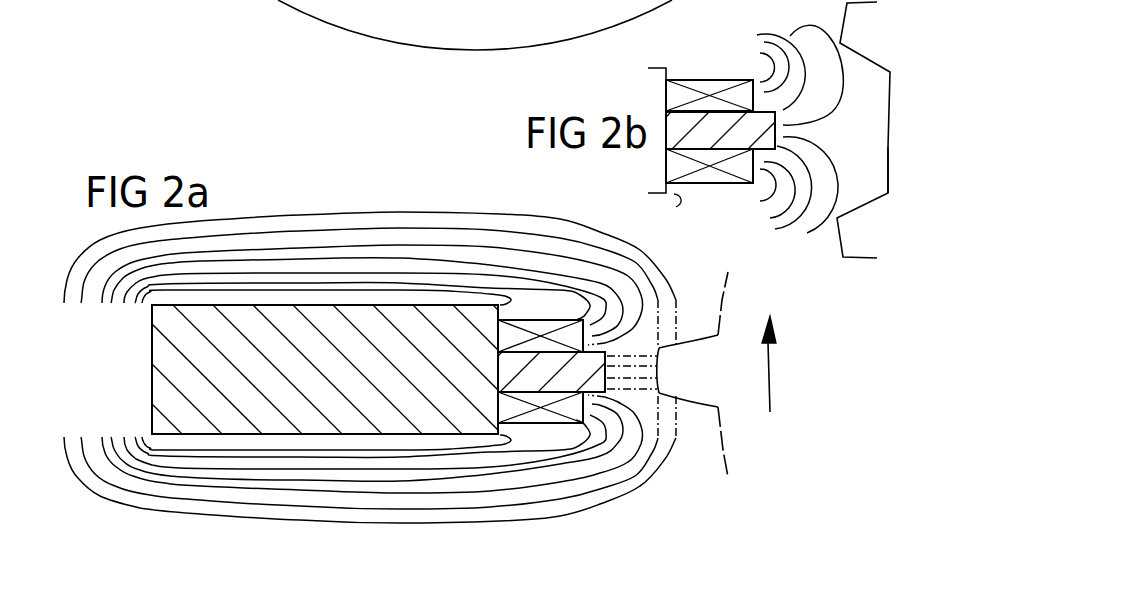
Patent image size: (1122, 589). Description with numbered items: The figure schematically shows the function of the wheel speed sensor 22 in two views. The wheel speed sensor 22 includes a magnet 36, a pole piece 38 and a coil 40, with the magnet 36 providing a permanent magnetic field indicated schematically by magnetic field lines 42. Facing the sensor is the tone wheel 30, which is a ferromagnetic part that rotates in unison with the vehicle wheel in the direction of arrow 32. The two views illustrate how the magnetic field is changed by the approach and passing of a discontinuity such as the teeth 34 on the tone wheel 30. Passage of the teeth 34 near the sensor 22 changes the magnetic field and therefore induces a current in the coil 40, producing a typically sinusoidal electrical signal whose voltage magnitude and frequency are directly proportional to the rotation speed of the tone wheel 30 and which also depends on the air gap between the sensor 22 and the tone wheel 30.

In FIG. 2a, the wheel speed sensor 22 is at (309, 196).
In FIG. 2a, the tone wheel 30 is at (718, 440).
In FIG. 2b, the tone wheel 30 is at (888, 152).
In FIG. 2a, the arrow 32 is at (772, 372).
In FIG. 2a, the teeth 34 is at (706, 388).
In FIG. 2b, the teeth 34 is at (882, 48).
In FIG. 2a, the magnet 36 is at (344, 385).
In FIG. 2a, the pole piece 38 is at (554, 388).
In FIG. 2b, the pole piece 38 is at (709, 132).
In FIG. 2a, the coil 40 is at (560, 320).
In FIG. 2b, the coil 40 is at (690, 79).
In FIG. 2b, the magnetic field lines 42 is at (790, 36).